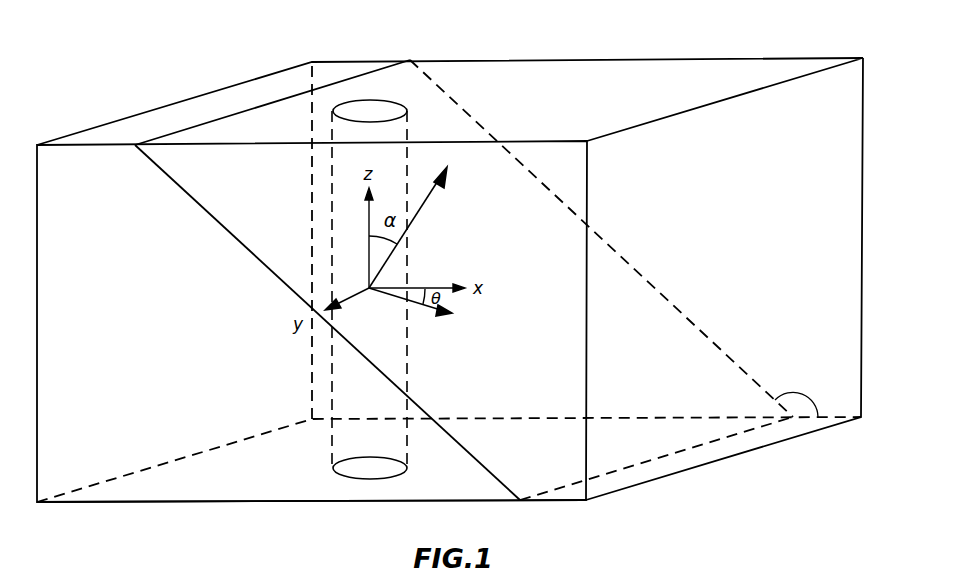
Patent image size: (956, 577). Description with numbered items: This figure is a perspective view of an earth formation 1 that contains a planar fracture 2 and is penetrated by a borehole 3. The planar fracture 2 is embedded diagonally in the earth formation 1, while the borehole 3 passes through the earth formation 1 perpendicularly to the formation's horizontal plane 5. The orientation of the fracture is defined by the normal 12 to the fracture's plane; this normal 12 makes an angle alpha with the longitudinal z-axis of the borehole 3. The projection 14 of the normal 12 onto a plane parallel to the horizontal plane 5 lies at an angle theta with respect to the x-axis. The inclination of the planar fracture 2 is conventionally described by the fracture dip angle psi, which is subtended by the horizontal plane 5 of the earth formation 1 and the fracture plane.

The earth formation 1 is at (121, 277).
The planar fracture 2 is at (270, 103).
The borehole 3 is at (378, 110).
The horizontal plane 5 is at (167, 503).
The normal 12 is at (433, 198).
The projection 14 is at (418, 303).